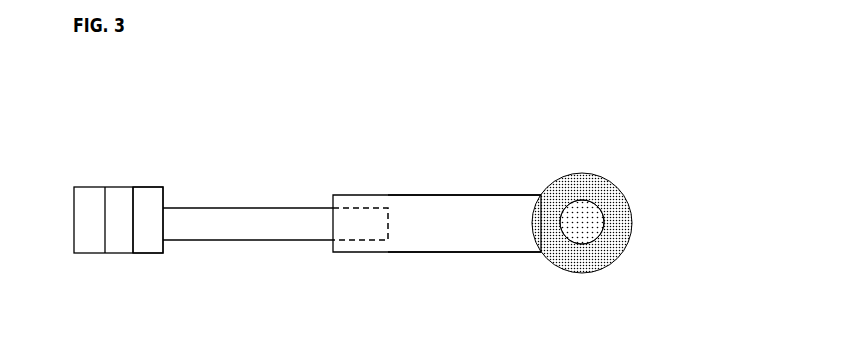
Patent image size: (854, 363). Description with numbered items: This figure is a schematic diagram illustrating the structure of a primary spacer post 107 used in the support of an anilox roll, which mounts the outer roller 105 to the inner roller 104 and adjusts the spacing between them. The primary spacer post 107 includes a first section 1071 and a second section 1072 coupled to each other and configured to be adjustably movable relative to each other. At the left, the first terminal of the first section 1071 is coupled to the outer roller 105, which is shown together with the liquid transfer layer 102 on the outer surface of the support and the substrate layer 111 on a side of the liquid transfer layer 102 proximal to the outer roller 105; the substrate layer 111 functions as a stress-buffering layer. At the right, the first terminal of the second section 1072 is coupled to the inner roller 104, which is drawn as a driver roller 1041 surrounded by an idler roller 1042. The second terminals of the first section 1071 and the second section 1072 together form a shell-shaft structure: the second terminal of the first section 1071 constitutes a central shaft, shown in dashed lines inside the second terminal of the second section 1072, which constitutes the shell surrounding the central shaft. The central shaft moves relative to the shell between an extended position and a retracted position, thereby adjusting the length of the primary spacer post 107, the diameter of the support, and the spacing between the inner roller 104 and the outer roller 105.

The liquid transfer layer 102 is at (92, 202).
The substrate layer 111 is at (122, 202).
The outer roller 105 is at (153, 202).
The primary spacer post 107 is at (421, 252).
The first section 1071 is at (308, 241).
The second section 1072 is at (382, 263).
The inner roller 104 is at (641, 223).
The driver roller 1041 is at (603, 231).
The idler roller 1042 is at (609, 241).